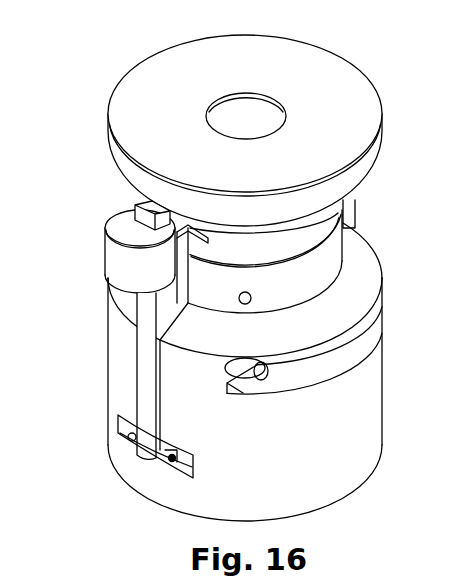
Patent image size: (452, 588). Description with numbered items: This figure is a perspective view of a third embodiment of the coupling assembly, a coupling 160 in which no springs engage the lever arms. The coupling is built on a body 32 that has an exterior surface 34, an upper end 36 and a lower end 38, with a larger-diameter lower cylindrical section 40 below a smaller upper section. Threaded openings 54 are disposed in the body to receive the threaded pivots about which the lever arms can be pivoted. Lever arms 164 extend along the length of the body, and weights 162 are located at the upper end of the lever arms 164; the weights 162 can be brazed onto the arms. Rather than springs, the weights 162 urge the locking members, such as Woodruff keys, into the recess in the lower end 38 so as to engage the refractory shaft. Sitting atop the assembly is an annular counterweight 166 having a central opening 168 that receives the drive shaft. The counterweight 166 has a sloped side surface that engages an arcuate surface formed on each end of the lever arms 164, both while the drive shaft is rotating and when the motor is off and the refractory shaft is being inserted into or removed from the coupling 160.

The body 32 is at (352, 412).
The exterior surface 34 is at (345, 234).
The upper end 36 is at (320, 265).
The lower end 38 is at (301, 487).
The lower cylindrical section 40 is at (117, 372).
The threaded openings 54 is at (342, 375).
The coupling 160 is at (352, 296).
The weights 162 is at (124, 258).
The lever arms 164 is at (148, 306).
The annular counterweight 166 is at (338, 92).
The central opening 168 is at (252, 99).